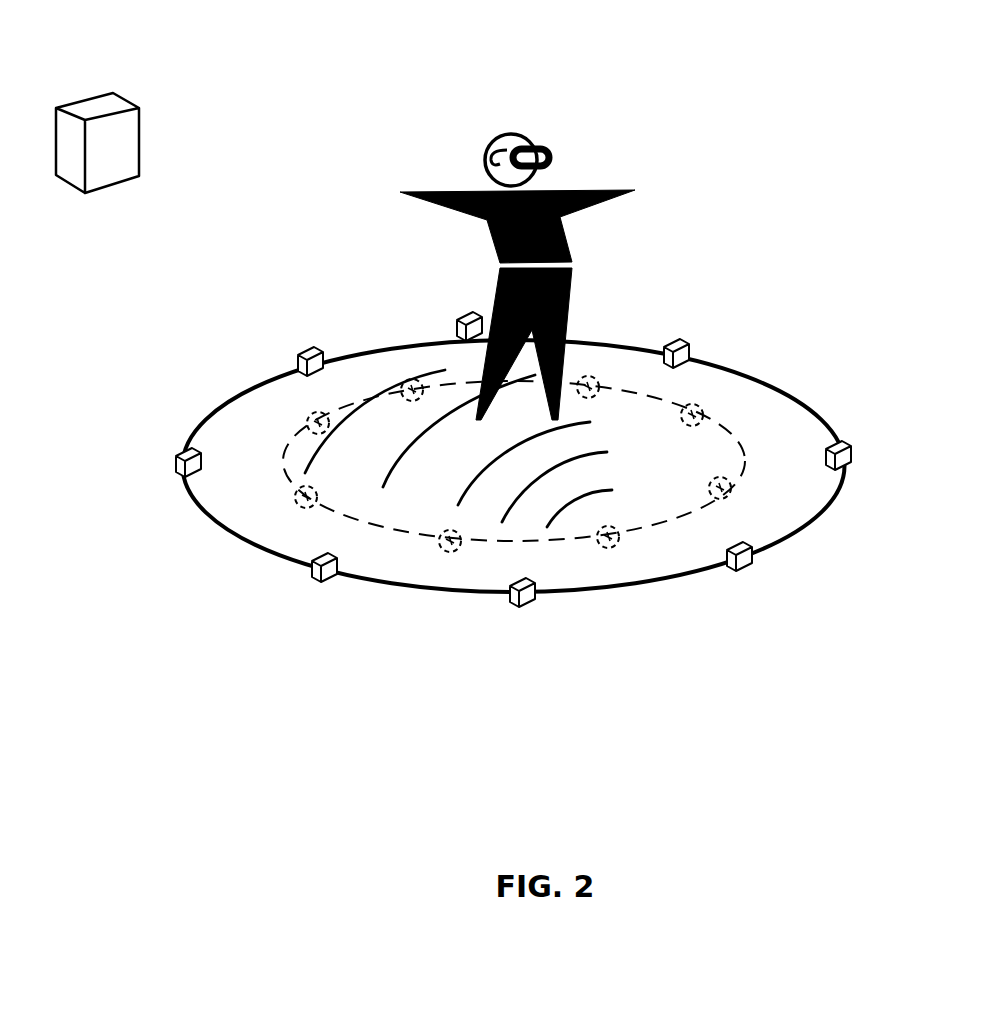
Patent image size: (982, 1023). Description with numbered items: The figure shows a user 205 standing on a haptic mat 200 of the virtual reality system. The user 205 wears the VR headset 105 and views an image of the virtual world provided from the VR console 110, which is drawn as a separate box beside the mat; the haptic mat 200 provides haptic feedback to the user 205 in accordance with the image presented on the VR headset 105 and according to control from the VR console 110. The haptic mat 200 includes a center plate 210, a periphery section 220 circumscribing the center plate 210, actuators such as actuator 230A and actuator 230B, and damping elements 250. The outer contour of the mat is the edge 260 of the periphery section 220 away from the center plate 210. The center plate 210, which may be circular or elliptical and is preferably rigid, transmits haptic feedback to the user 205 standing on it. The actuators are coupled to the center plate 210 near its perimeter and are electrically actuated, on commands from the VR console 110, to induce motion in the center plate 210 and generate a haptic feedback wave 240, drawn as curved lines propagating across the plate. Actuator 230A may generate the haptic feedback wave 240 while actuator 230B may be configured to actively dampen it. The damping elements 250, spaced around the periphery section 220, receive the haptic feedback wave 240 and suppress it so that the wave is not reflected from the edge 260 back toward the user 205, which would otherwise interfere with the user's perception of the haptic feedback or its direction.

The VR console 110 is at (148, 116).
The user 205 is at (457, 160).
The VR headset 105 is at (550, 142).
The haptic mat 200 is at (478, 476).
The edge 260 is at (745, 373).
The damping elements 250 is at (298, 343).
The center plate 210 is at (656, 458).
The periphery section 220 is at (799, 435).
The haptic feedback wave 240 is at (435, 500).
The actuator 230A is at (617, 548).
The actuator 230B is at (427, 383).